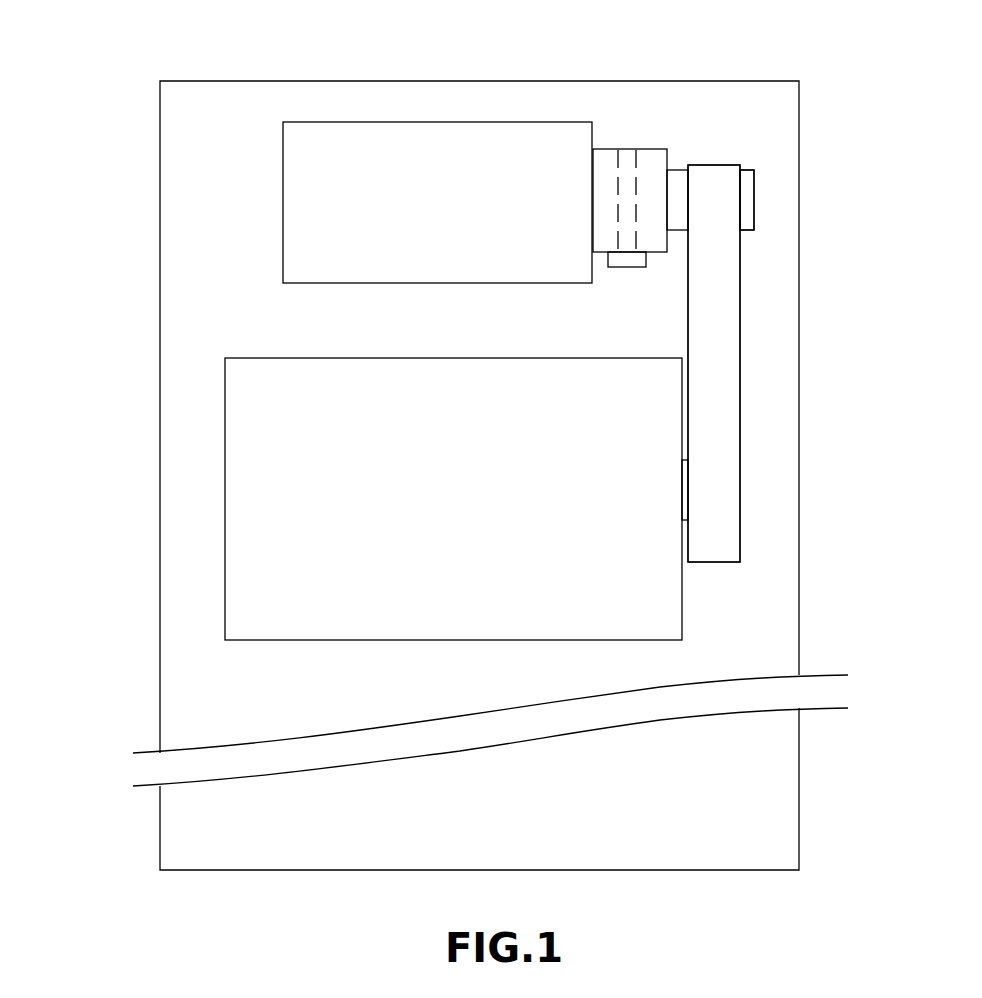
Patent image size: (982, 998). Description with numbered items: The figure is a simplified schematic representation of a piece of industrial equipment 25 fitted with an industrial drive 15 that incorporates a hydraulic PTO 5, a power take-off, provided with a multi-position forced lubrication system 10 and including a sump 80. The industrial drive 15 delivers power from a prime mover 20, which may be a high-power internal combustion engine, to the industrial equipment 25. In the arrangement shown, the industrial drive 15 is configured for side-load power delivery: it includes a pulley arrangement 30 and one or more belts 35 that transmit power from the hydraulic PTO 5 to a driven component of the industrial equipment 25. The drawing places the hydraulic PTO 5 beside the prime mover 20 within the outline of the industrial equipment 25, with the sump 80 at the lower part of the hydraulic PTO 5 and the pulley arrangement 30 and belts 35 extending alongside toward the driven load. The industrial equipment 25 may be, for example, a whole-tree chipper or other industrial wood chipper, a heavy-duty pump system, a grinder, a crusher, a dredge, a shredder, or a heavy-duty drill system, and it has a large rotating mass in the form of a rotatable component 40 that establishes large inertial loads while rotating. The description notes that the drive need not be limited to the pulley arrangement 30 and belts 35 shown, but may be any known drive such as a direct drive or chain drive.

The hydraulic PTO 5 is at (625, 112).
The multi-position forced lubrication system 10 is at (627, 172).
The industrial drive 15 is at (715, 137).
The prime mover 20 is at (397, 134).
The industrial equipment 25 is at (137, 437).
The pulley arrangement 30 is at (761, 185).
The belt 35 is at (727, 297).
The rotatable component 40 is at (341, 632).
The sump 80 is at (623, 268).